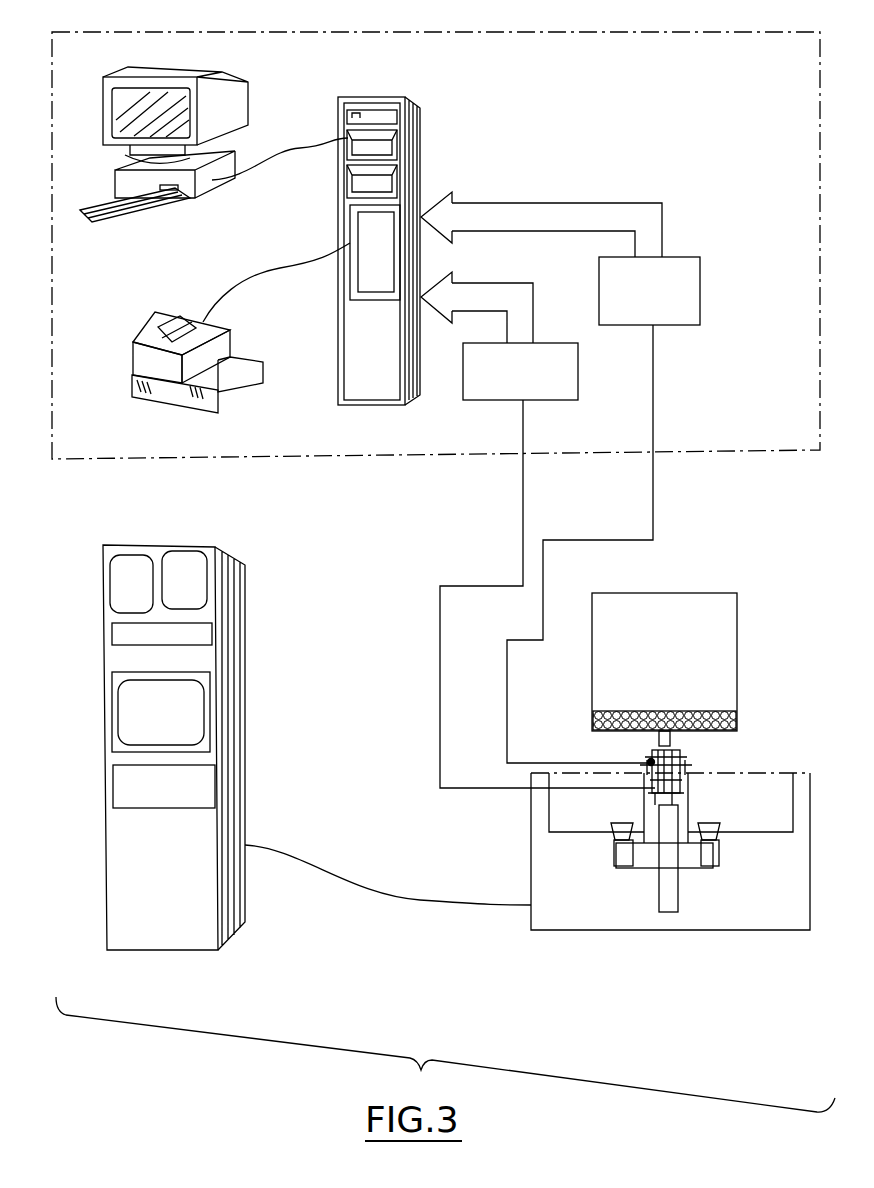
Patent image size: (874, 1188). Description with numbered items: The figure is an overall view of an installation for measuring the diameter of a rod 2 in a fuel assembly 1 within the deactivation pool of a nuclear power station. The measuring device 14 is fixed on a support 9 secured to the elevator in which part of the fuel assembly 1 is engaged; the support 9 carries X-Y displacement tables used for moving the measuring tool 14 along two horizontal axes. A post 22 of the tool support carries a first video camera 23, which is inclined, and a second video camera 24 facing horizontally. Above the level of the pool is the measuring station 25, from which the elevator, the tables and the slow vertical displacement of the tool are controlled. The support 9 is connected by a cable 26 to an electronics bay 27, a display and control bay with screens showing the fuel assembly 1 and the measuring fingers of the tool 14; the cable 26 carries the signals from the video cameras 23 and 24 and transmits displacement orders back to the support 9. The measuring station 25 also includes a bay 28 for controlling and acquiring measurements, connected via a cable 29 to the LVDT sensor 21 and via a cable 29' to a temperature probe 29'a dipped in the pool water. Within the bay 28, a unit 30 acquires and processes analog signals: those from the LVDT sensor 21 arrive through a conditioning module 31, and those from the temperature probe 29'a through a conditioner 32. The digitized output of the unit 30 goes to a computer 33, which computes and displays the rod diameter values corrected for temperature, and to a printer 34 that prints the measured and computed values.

The fuel assembly 1 is at (750, 648).
The rod 2 is at (700, 709).
The support 9 is at (578, 928).
The measuring device 14 is at (690, 757).
The LVDT sensor 21 is at (650, 790).
The post 22 is at (678, 903).
The first video camera 23 is at (617, 855).
The second video camera 24 is at (720, 855).
The measuring station 25 is at (73, 615).
The cable 26 is at (506, 896).
The electronics bay 27 is at (103, 870).
The bay for controlling and acquiring measurements 28 is at (137, 466).
The cable 29 is at (516, 594).
The cable 29' is at (580, 544).
The temperature probe 29'a is at (612, 752).
The unit for acquiring and processing analog signals 30 is at (422, 132).
The conditioning module 31 is at (557, 403).
The conditioner 32 is at (690, 292).
The computer 33 is at (178, 98).
The printer 34 is at (178, 322).